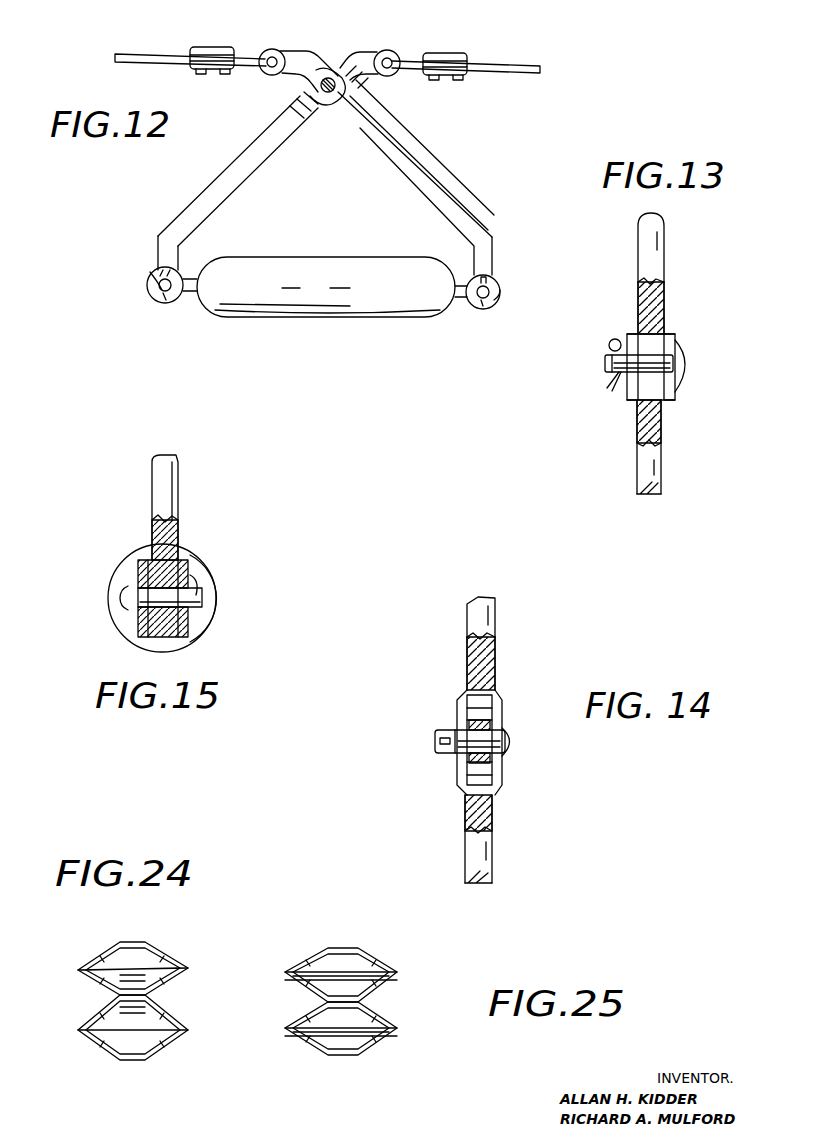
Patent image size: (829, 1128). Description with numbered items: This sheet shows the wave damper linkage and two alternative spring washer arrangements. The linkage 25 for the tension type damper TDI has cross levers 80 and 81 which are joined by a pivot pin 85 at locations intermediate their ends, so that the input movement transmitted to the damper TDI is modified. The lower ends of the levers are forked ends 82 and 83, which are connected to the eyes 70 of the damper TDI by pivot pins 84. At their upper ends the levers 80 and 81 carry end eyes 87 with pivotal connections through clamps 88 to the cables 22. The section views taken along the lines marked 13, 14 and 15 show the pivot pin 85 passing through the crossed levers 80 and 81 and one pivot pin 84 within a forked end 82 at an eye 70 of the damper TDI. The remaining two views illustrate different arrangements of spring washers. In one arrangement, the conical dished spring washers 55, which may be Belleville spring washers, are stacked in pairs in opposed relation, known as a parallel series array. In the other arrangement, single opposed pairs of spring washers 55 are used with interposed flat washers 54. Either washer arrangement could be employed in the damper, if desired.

In FIG. 12, the insulator 13 is at (250, 48).
In FIG. 13, the section line 14-14 indicator 14 is at (567, 390).
In FIG. 12, the section line 15-15 indicator 15 is at (196, 180).
In FIG. 12, the cables 22 is at (142, 56).
In FIG. 12, the linkage 25 is at (455, 158).
In FIG. 25, the flat washers 54 is at (400, 976).
In FIG. 24, the spring washers 55 is at (86, 956).
In FIG. 25, the spring washers 55 is at (395, 962).
In FIG. 15, the eyes 70 is at (170, 622).
In FIG. 12, the cross lever 80 is at (252, 158).
In FIG. 13, the cross lever 80 is at (660, 302).
In FIG. 14, the cross lever 80 is at (488, 762).
In FIG. 12, the cross lever 81 is at (418, 176).
In FIG. 13, the cross lever 81 is at (652, 412).
In FIG. 14, the cross lever 81 is at (492, 673).
In FIG. 12, the forked end 82 is at (160, 300).
In FIG. 15, the forked end 82 is at (186, 578).
In FIG. 12, the forked end 83 is at (498, 303).
In FIG. 12, the pivot pins 84 is at (160, 286).
In FIG. 15, the pivot pins 84 is at (132, 604).
In FIG. 12, the pivot pin 85 is at (320, 85).
In FIG. 13, the pivot pin 85 is at (668, 363).
In FIG. 14, the pivot pin 85 is at (496, 745).
In FIG. 12, the end eyes 87 is at (286, 50).
In FIG. 12, the clamps 88 is at (212, 50).
In FIG. 12, the tension type damper TDI is at (322, 312).
In FIG. 15, the tension type damper TDI is at (215, 596).